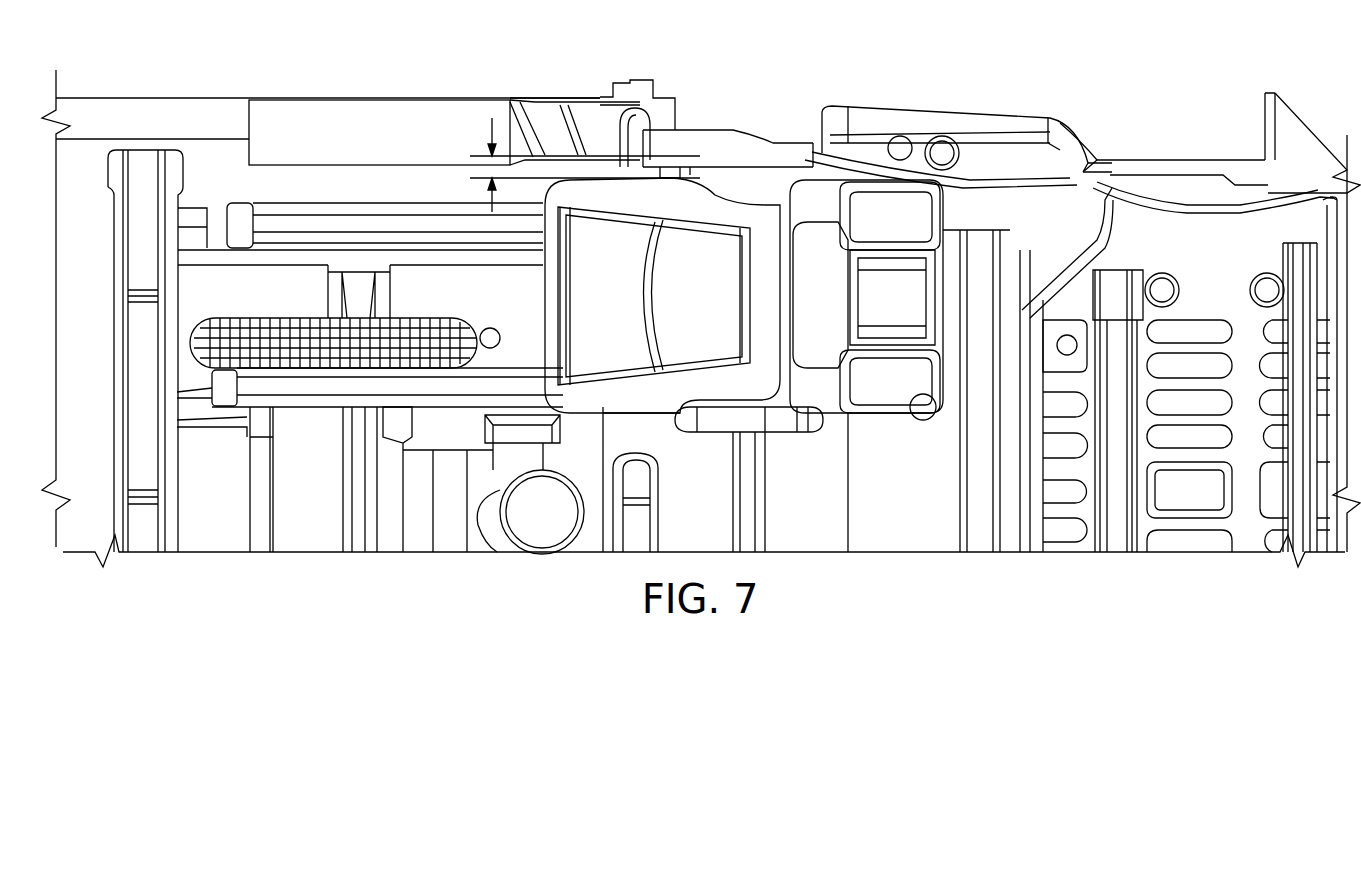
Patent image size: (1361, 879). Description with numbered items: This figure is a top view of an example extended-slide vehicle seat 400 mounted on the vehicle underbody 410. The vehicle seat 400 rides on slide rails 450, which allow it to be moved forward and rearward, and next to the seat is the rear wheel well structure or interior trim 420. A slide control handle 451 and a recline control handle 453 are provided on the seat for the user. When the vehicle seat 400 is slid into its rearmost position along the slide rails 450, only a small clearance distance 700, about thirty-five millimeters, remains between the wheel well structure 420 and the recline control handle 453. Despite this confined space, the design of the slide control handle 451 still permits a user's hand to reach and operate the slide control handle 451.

The extended-slide vehicle seat 400 is at (738, 160).
The vehicle underbody 410 is at (183, 107).
The rear wheel well structure or interior trim 420 is at (942, 92).
The slide rails 450 is at (352, 203).
The slide control handle 451 is at (632, 168).
The recline control handle 453 is at (660, 167).
The clearance distance 700 is at (488, 128).